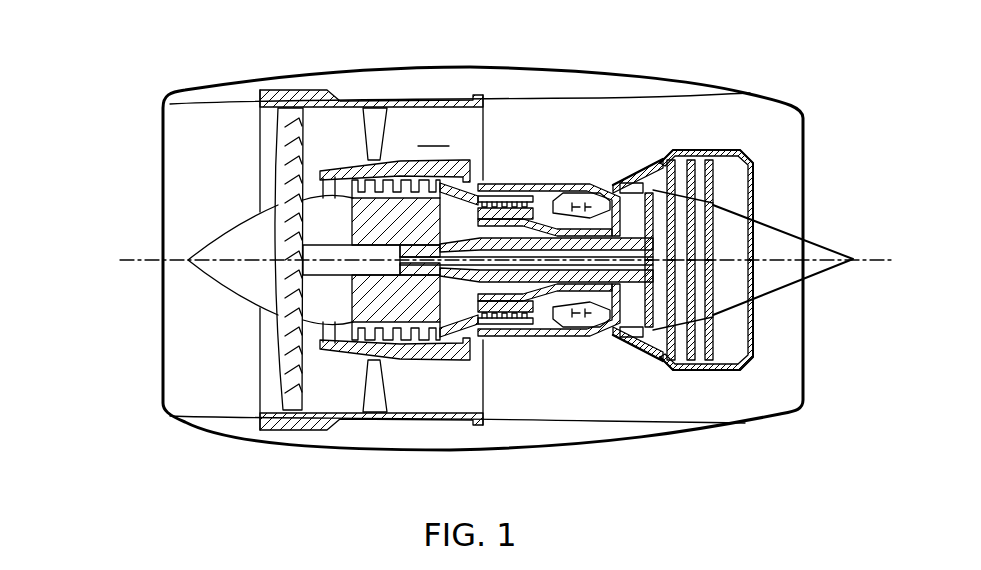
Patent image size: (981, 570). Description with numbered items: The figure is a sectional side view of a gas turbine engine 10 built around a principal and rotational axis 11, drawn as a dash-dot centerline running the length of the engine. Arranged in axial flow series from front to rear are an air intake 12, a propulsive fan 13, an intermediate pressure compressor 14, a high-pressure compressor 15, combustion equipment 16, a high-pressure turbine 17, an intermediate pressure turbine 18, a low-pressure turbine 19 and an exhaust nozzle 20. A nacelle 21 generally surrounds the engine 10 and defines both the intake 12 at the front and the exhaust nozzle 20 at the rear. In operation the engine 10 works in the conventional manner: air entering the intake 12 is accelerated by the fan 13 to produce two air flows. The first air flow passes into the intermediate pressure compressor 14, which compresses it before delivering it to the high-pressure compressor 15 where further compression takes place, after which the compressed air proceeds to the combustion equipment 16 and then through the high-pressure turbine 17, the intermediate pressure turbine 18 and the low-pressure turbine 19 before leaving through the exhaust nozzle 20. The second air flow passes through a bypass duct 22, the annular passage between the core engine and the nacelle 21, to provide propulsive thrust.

The gas turbine engine 10 is at (131, 135).
The principal and rotational axis 11 is at (173, 260).
The air intake 12 is at (223, 102).
The propulsive fan 13 is at (280, 368).
The intermediate pressure compressor 14 is at (415, 338).
The high-pressure compressor 15 is at (510, 200).
The combustion equipment 16 is at (567, 322).
The high-pressure turbine 17 is at (613, 338).
The intermediate pressure turbine 18 is at (647, 173).
The low-pressure turbine 19 is at (660, 360).
The exhaust nozzle 20 is at (805, 408).
The nacelle 21 is at (634, 73).
The bypass duct 22 is at (371, 260).